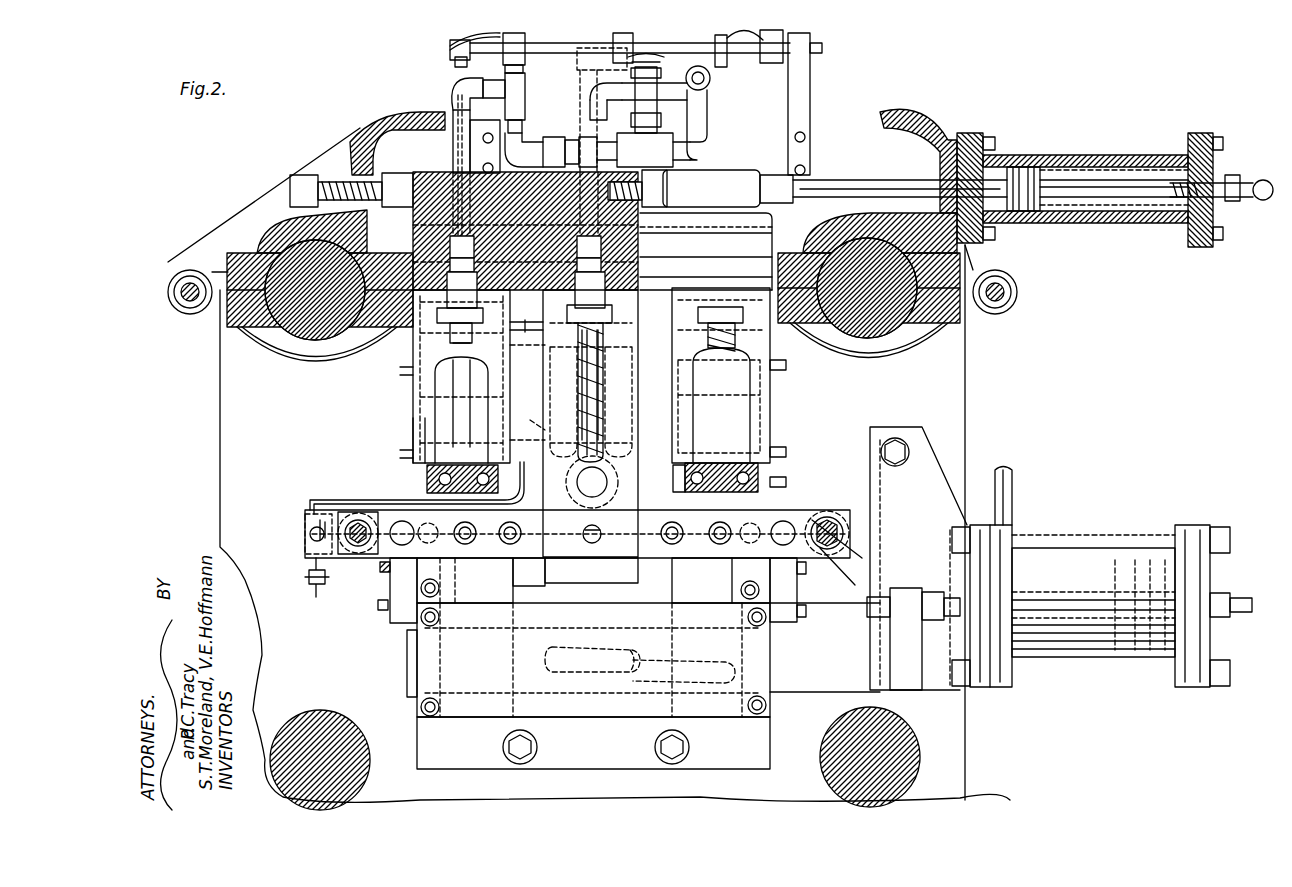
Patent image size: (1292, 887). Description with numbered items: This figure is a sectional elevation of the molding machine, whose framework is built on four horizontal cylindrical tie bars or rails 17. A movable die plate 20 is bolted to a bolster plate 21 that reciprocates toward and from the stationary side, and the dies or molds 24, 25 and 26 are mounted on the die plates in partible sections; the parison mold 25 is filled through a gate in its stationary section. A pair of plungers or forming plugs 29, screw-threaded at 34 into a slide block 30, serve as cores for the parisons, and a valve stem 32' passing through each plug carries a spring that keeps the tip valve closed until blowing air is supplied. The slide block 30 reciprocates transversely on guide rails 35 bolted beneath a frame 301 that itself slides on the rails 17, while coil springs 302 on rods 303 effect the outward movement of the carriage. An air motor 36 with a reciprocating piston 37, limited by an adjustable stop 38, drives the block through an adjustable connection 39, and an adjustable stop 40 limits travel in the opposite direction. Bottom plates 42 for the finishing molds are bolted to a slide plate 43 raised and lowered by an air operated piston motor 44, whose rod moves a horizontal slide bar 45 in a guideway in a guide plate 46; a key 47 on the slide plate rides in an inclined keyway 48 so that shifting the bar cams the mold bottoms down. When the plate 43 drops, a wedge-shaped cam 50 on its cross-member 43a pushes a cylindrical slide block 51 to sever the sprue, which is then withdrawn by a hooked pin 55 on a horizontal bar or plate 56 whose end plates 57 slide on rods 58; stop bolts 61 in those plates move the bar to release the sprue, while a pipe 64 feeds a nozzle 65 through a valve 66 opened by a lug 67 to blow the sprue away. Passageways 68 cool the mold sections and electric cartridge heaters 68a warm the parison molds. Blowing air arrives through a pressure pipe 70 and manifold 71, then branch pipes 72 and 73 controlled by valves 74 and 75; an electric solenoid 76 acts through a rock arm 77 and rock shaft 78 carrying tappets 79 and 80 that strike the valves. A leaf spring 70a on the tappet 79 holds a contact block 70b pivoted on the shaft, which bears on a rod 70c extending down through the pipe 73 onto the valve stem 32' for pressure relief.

The horizontal cylindrical tie bars or rails 17 is at (305, 330).
The movable die plate 20 is at (716, 770).
The bolster plate 21 is at (232, 472).
The die or mold 24 is at (696, 395).
The parison mold 25 is at (618, 388).
The die or mold 26 is at (413, 425).
The plungers or forming plugs 29 is at (490, 392).
The slide block 30 is at (640, 215).
The valve stem 32' is at (488, 269).
The screw-threaded portion 34 is at (600, 265).
The guide rails 35 is at (710, 242).
The air motor 36 is at (1072, 158).
The reciprocating piston 37 is at (1022, 165).
The adjustable stop 38 is at (1170, 197).
The adjustable connection 39 is at (728, 178).
The adjustable stop 40 is at (385, 180).
The bottom plates 42 is at (462, 500).
The slide plate 43 is at (580, 560).
The cross-member 43a is at (752, 500).
The air operated piston motor 44 is at (1102, 556).
The horizontal slide bar 45 is at (814, 685).
The guide plate 46 is at (630, 712).
The key 47 is at (632, 660).
The inclined keyway 48 is at (698, 662).
The wedge-shaped cam 50 is at (612, 470).
The cylindrical slide block 51 is at (604, 482).
The pin 55 is at (592, 541).
The horizontal bar or plate 56 is at (535, 560).
The plates 57 is at (500, 556).
The rods 58 is at (400, 545).
The stop bolts 61 is at (358, 520).
The pipe 64 is at (330, 512).
The nozzle 65 is at (530, 485).
The valve 66 is at (304, 524).
The lug 67 is at (304, 550).
The passageways 68 is at (500, 376).
The electric cartridge heaters 68a is at (545, 432).
The pressure pipe 70 is at (716, 80).
The leaf spring 70a is at (446, 42).
The contact block 70b is at (444, 58).
The rod 70c is at (446, 80).
The manifold 71 is at (572, 112).
The branch pipe 72 is at (600, 118).
The branch pipe 73 is at (450, 128).
The valve 74 is at (648, 56).
The valve 75 is at (538, 72).
The electric solenoid 76 is at (548, 110).
The rock arm 77 is at (622, 34).
The rock shaft 78 is at (694, 44).
The tappet 79 is at (514, 37).
The tappet 80 is at (782, 30).
The frame 301 is at (350, 140).
The coil springs 302 is at (176, 285).
The rods 303 is at (184, 298).